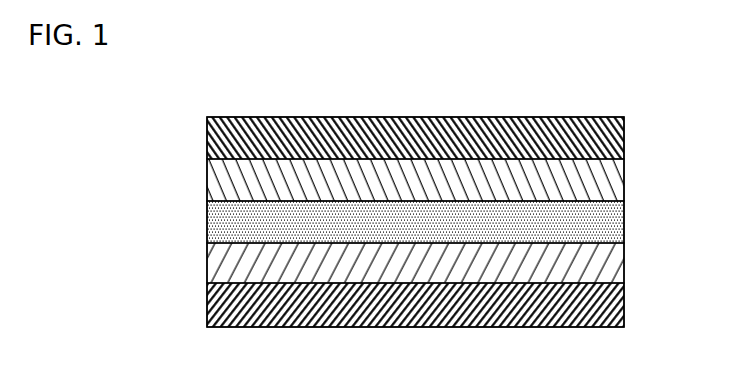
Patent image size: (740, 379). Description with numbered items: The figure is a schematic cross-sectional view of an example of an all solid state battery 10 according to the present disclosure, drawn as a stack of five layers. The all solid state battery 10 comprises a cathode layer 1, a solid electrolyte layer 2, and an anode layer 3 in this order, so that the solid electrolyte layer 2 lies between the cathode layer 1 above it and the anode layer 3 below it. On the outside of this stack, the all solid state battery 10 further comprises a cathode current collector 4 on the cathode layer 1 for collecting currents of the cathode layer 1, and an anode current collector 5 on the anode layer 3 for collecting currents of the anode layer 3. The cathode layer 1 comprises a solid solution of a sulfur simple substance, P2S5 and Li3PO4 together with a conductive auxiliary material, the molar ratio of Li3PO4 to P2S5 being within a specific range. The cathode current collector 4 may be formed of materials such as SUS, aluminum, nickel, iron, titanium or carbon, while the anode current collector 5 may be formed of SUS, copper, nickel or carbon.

The all solid state battery 10 is at (608, 104).
The cathode current collector 4 is at (612, 128).
The cathode layer 1 is at (609, 170).
The solid electrolyte layer 2 is at (612, 213).
The anode layer 3 is at (608, 253).
The anode current collector 5 is at (612, 295).